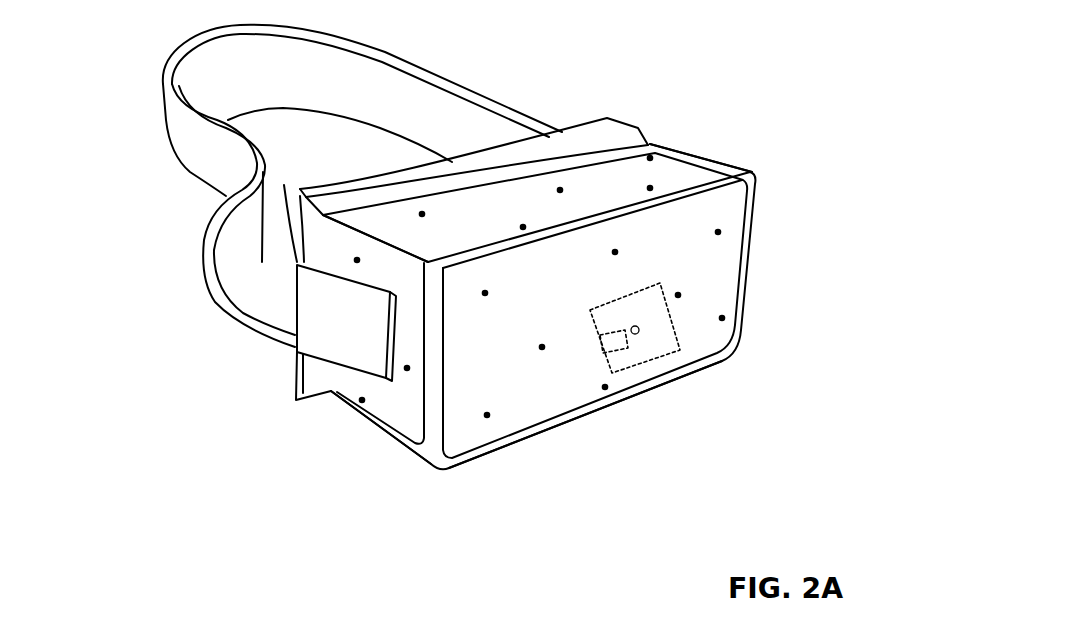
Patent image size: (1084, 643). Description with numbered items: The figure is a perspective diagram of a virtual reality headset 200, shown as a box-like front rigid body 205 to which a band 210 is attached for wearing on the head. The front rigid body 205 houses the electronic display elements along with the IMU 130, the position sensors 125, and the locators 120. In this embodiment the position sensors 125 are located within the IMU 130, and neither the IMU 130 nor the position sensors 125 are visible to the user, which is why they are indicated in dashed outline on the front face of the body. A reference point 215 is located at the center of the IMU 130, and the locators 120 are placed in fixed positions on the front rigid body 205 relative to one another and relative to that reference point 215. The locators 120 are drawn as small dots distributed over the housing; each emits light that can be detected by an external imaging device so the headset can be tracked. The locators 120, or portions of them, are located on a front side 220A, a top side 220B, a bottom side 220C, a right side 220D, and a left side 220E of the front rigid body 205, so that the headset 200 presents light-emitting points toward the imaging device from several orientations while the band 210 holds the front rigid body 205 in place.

The VR headset 200 is at (83, 23).
The front rigid body 205 is at (878, 120).
The band 210 is at (463, 92).
The reference point 215 is at (641, 349).
The locators 120 is at (739, 308).
The position sensors 125 is at (605, 365).
The IMU 130 is at (694, 349).
The front side 220A is at (474, 445).
The top side 220B is at (385, 214).
The bottom side 220C is at (356, 450).
The right side 220D is at (397, 410).
The left side 220E is at (722, 160).